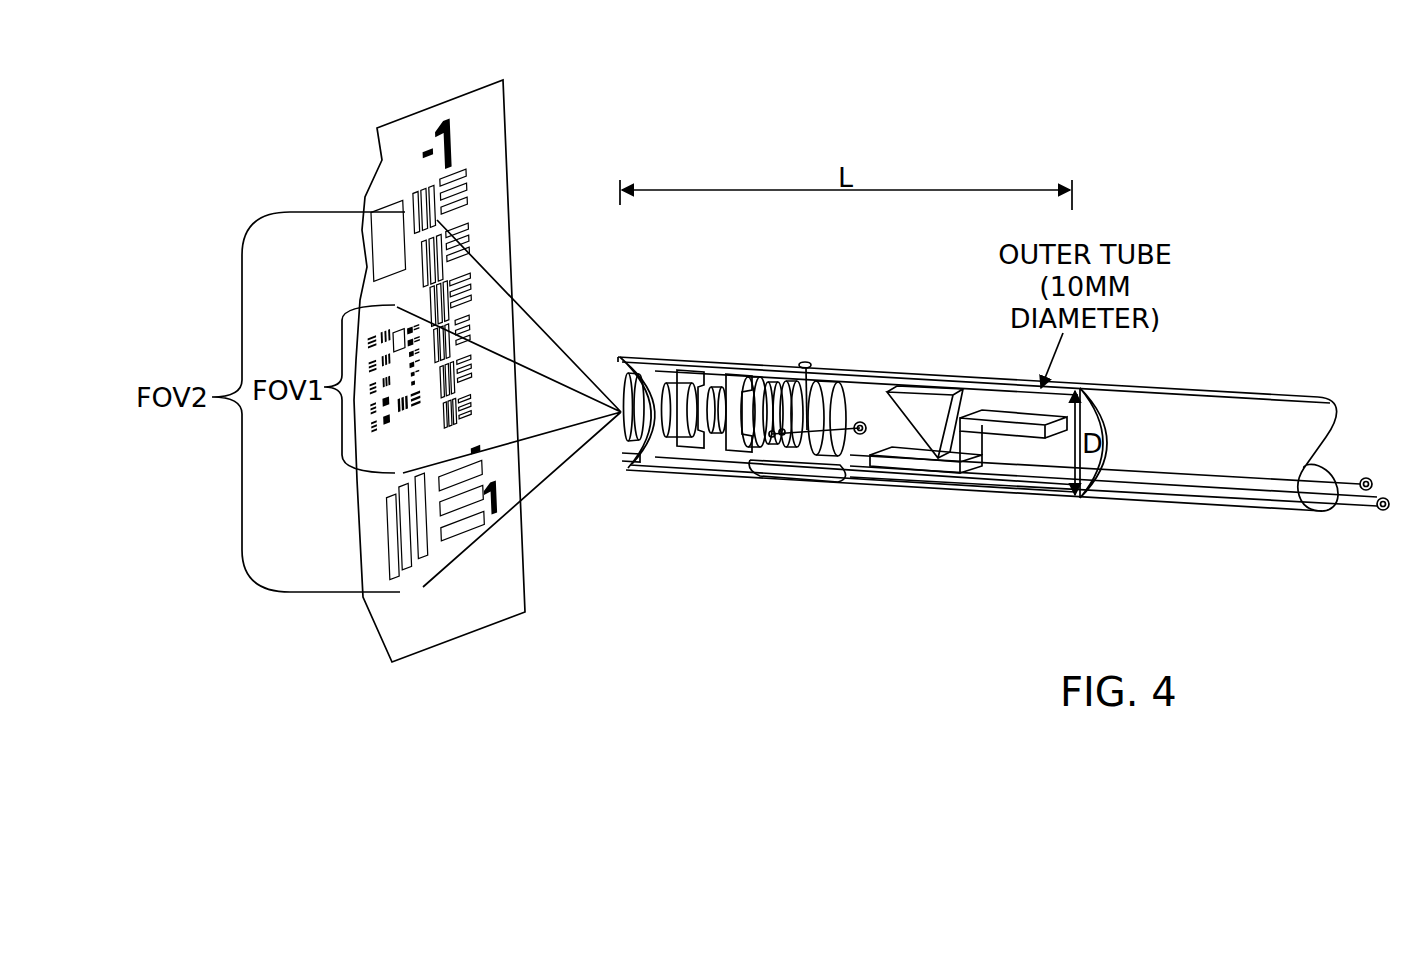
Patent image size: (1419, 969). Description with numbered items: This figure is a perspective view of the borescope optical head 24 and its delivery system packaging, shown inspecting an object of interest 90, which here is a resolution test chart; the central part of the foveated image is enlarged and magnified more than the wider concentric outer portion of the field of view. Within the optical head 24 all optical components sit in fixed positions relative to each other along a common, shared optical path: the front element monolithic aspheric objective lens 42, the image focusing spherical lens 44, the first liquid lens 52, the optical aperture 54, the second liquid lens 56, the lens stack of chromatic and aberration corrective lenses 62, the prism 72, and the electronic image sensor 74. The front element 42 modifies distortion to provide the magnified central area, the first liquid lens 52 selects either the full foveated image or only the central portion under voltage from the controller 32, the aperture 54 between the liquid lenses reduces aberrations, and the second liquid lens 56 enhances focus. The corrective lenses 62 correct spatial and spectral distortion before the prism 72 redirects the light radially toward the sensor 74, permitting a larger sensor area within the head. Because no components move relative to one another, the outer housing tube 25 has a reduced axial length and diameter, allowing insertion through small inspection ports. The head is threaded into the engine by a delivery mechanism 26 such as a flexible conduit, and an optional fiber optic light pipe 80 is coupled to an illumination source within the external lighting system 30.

The optical head 24 is at (715, 576).
The outer housing tube 25 is at (856, 370).
The delivery mechanism 26 is at (1256, 366).
The lighting system 30 is at (1383, 511).
The controller 32 is at (1362, 478).
The front element monolithic aspheric objective lens 42 is at (633, 470).
The image focusing spherical lens 44 is at (675, 437).
The first liquid lens 52 is at (684, 376).
The optical aperture 54 is at (717, 440).
The second liquid lens 56 is at (738, 378).
The lens stack of chromatic/aberration corrective lenses 62 is at (840, 483).
The prism 72 is at (928, 388).
The electronic image sensor 74 is at (906, 468).
The fiber optic light pipe 80 is at (607, 465).
The object of interest 90 is at (386, 138).